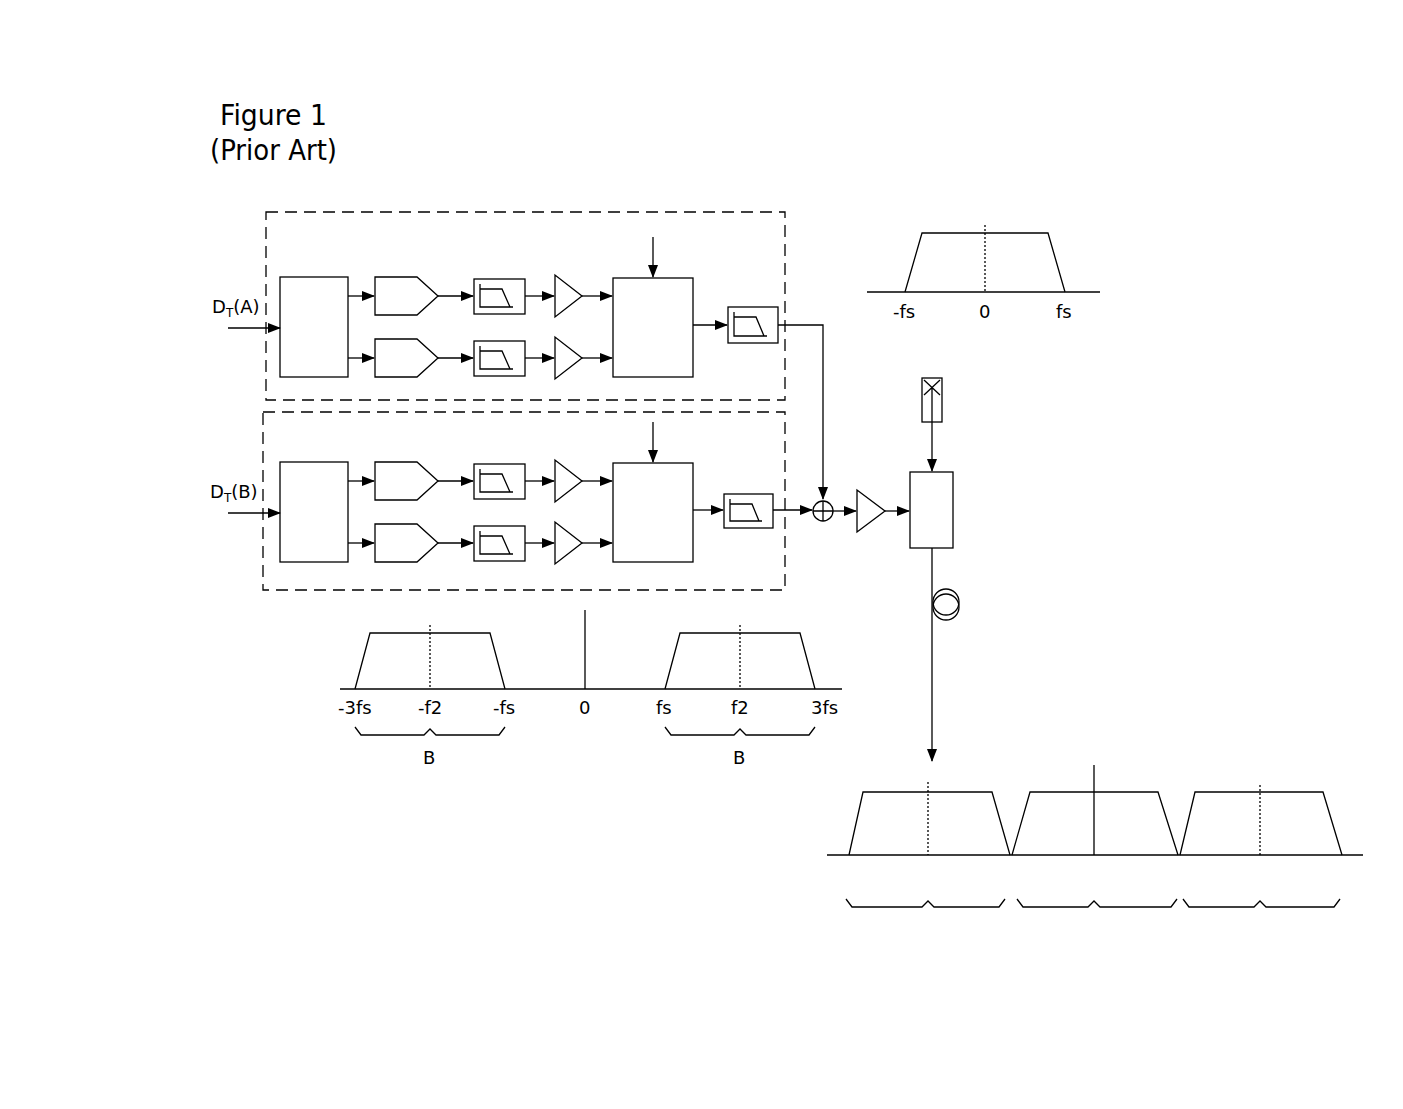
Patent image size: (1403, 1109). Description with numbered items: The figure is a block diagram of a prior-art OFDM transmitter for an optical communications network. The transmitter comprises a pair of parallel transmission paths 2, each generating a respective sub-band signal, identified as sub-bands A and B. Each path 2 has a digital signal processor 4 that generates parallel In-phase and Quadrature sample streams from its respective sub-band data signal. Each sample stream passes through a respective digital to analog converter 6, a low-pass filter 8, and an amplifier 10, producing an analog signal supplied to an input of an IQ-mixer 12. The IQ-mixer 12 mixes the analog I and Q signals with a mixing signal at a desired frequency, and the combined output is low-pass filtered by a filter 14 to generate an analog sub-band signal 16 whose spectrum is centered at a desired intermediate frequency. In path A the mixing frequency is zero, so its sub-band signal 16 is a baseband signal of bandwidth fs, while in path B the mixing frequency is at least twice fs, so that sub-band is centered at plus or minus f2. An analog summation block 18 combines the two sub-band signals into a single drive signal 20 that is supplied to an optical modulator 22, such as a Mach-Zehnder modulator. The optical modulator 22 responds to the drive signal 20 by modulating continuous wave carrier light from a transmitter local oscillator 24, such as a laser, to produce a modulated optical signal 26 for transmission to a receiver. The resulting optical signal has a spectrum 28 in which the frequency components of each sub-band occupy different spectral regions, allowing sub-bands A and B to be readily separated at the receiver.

The transmission path 2 is at (512, 212).
The digital signal processor 4 is at (328, 276).
The digital to analog converter 6 is at (406, 276).
The low-pass filter 8 is at (510, 278).
The amplifier 10 is at (572, 277).
The IQ-mixer 12 is at (693, 280).
The low-pass filter 14 is at (750, 343).
The analog sub-band signal 16 is at (823, 352).
The analog summation block 18 is at (831, 501).
The drive signal 20 is at (890, 514).
The optical modulator 22 is at (953, 520).
The transmitter local oscillator 24 is at (921, 398).
The modulated optical signal 26 is at (932, 658).
The spectrum 28 is at (1236, 750).